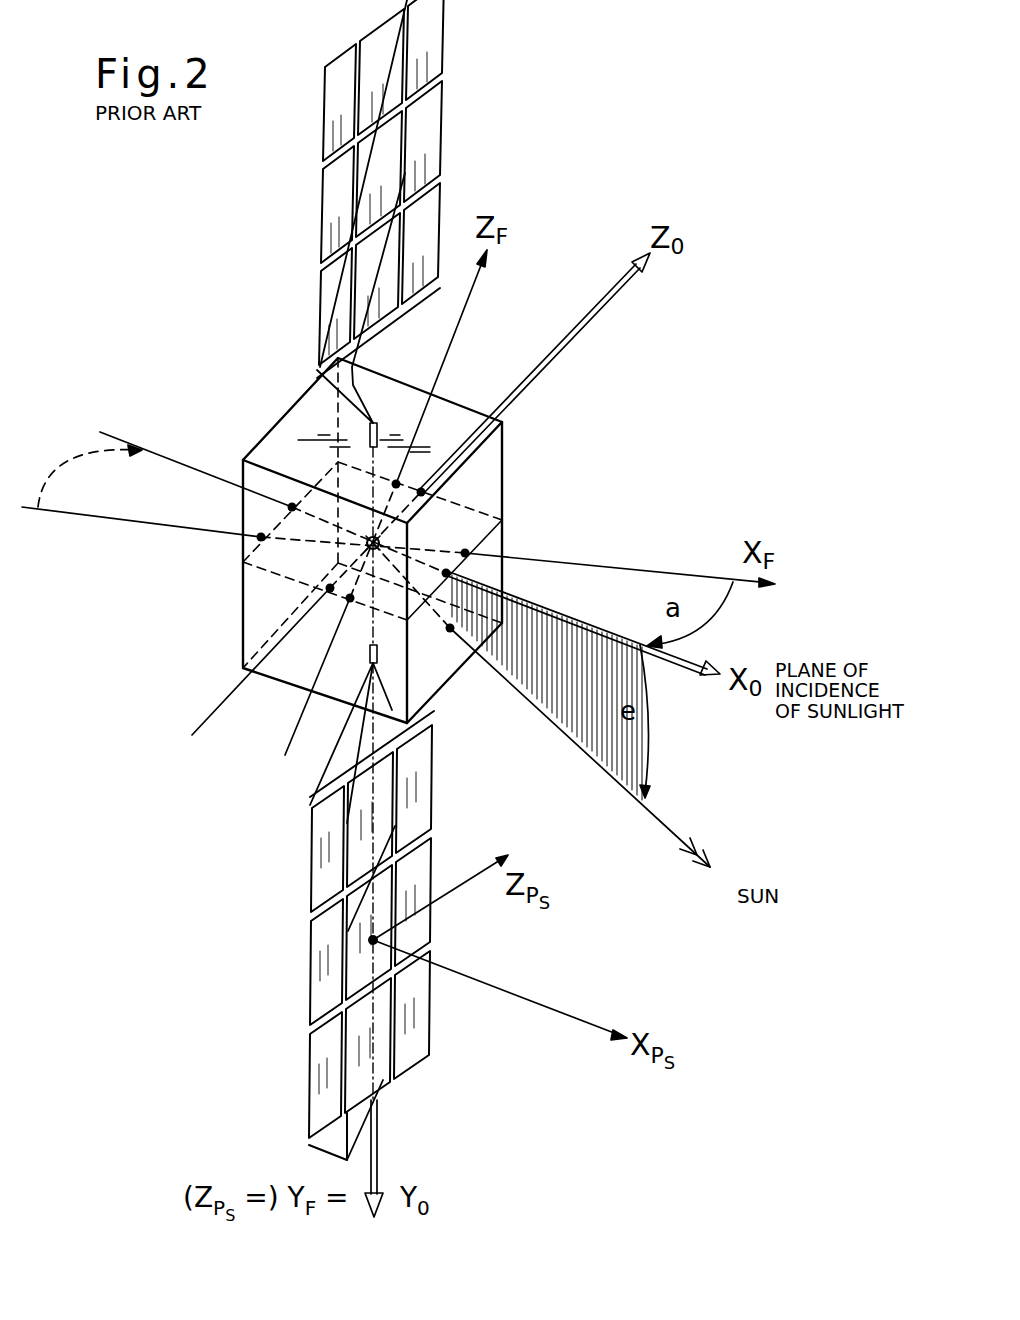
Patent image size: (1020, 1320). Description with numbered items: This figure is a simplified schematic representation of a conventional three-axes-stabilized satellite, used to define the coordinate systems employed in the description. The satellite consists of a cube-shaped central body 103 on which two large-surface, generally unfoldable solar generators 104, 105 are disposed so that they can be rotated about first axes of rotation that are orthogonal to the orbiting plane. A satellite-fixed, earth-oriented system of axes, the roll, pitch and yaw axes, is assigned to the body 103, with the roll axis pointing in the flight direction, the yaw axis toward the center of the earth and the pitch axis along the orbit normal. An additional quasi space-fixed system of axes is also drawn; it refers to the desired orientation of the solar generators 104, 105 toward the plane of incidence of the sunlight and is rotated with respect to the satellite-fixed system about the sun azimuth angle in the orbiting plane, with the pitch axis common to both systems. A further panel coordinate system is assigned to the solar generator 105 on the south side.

The cube-shaped central body 103 is at (262, 606).
The solar generator 104 is at (418, 132).
The solar generator 105 is at (326, 960).